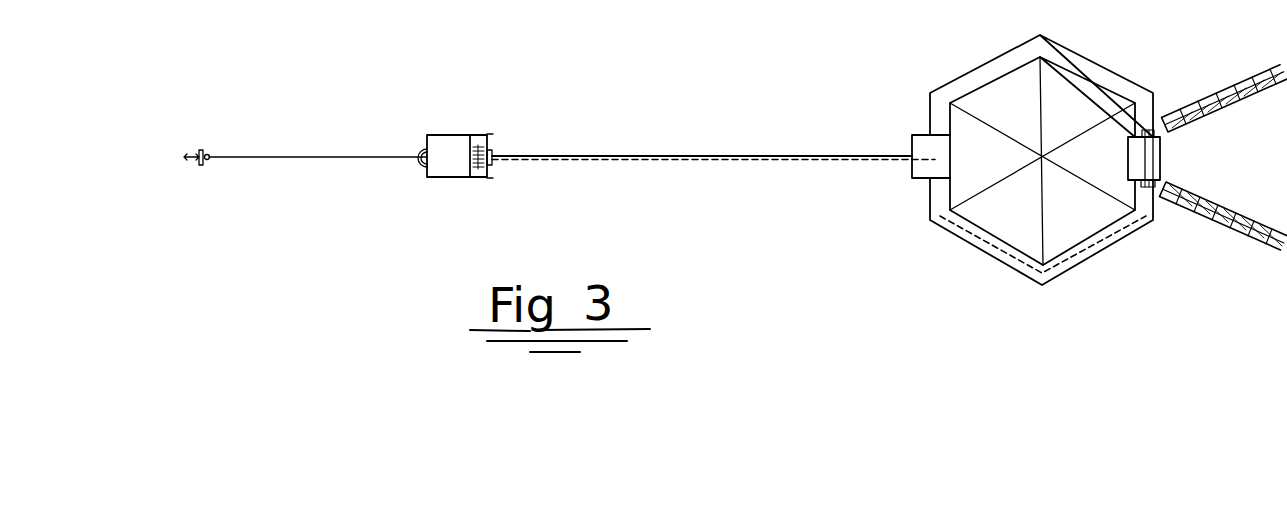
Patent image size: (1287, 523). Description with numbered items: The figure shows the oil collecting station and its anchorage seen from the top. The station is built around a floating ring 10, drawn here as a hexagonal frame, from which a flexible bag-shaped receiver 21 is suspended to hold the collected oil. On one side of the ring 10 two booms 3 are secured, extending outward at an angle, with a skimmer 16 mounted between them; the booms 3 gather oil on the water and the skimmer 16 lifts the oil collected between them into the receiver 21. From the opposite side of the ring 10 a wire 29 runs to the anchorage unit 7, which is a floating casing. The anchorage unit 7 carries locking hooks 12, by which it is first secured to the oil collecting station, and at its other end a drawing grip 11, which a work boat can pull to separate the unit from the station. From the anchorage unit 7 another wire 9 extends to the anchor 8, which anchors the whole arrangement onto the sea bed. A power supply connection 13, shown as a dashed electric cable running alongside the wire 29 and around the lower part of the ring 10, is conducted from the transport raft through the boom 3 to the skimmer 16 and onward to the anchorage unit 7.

The boom 3 is at (1207, 97).
The anchorage unit 7 is at (457, 142).
The anchor 8 is at (207, 153).
The wire 9 is at (350, 155).
The floating ring 10 is at (1100, 75).
The drawing grip 11 is at (416, 143).
The locking hooks 12 is at (490, 143).
The power supply connection 13 is at (697, 159).
The skimmer 16 is at (1160, 168).
The receiver 21 is at (963, 128).
The wire 29 is at (680, 155).